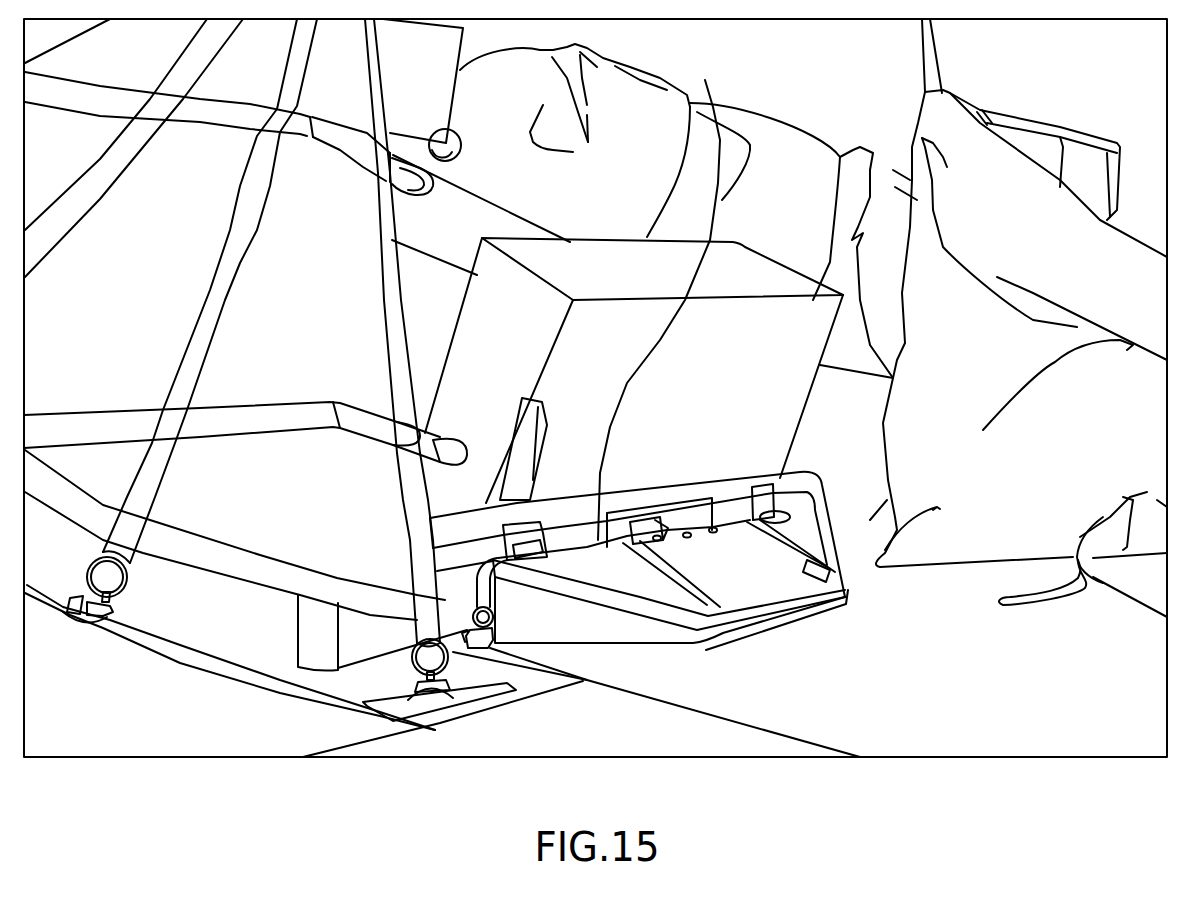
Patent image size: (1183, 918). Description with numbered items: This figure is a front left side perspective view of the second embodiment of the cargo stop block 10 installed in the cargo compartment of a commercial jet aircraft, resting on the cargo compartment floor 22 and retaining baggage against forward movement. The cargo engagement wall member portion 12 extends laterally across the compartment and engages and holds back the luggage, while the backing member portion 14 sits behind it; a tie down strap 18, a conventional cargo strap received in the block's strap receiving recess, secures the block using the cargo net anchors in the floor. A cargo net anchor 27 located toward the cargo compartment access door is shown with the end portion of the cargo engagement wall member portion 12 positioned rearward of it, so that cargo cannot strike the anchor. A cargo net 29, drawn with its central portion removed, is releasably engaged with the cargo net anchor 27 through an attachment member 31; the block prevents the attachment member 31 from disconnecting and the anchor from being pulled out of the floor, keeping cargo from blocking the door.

The cargo stop block 10 is at (882, 630).
The cargo engagement wall member portion 12 is at (445, 569).
The backing member portion 14 is at (522, 628).
The tie down strap 18 is at (659, 293).
The cargo compartment floor 22 is at (830, 681).
The cargo net anchor 27 is at (433, 708).
The cargo net 29 is at (273, 336).
The attachment member 31 is at (457, 670).